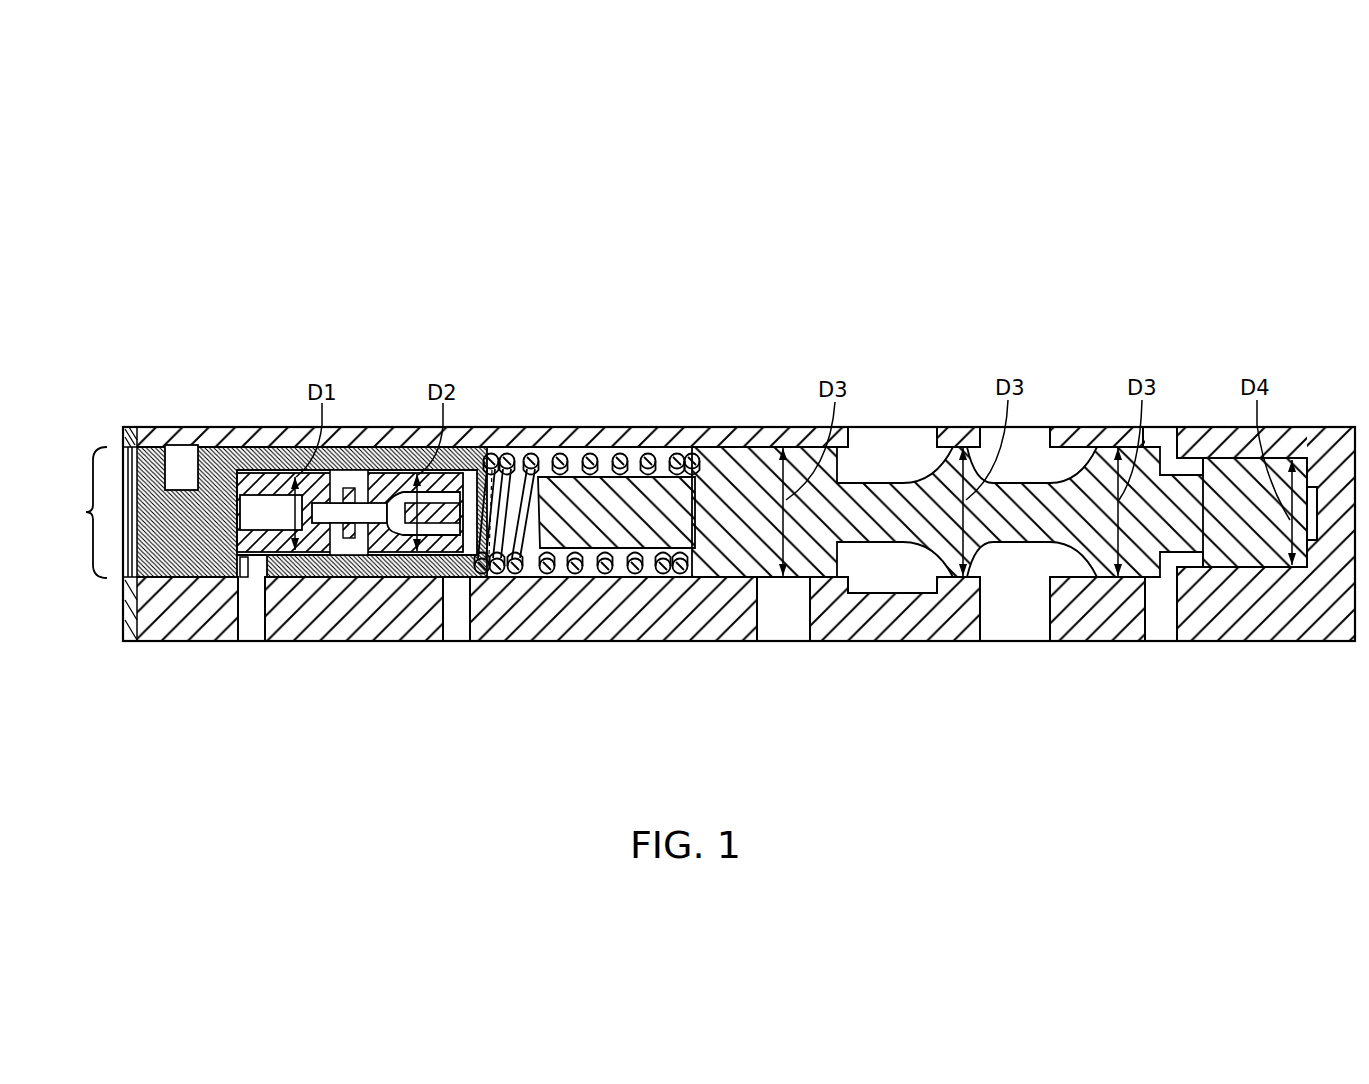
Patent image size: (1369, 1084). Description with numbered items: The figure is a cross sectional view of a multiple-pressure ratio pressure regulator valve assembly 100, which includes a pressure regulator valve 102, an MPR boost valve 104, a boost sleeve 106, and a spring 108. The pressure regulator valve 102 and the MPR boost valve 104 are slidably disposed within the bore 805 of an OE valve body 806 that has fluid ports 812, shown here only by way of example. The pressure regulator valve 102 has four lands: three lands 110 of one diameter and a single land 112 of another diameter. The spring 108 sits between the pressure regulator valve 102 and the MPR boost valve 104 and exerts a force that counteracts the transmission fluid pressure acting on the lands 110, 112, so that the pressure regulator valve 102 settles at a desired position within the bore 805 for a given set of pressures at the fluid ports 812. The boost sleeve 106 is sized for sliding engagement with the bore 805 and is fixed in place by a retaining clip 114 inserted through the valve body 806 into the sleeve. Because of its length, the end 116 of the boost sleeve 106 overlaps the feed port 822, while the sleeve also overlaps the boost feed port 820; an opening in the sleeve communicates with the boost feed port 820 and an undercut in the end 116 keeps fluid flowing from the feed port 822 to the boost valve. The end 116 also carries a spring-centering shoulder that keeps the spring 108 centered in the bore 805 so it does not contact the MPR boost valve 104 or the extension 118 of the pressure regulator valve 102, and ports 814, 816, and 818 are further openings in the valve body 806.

The multiple-pressure ratio pressure regulator valve assembly 100 is at (1182, 185).
The pressure regulator valve 102 is at (1016, 548).
The MPR boost valve 104 is at (255, 557).
The boost sleeve 106 is at (340, 473).
The spring 108 is at (516, 575).
The lands 110 is at (760, 527).
The land 112 is at (1253, 527).
The retaining clip 114 is at (178, 445).
The end of boost sleeve 116 is at (491, 452).
The extension of PRV 118 is at (605, 527).
The bore 805 is at (266, 512).
The OE valve body 806 is at (611, 427).
The fluid ports 812 is at (1244, 298).
The inlet port 814 is at (889, 415).
The outlet port 816 is at (781, 650).
The port 818 is at (1167, 415).
The boost feed port 820 is at (261, 650).
The feed port 822 is at (451, 650).